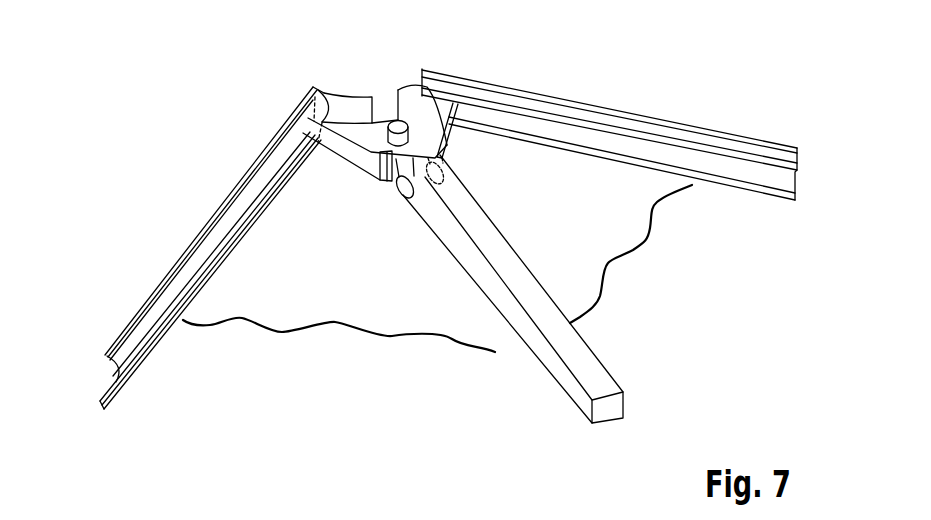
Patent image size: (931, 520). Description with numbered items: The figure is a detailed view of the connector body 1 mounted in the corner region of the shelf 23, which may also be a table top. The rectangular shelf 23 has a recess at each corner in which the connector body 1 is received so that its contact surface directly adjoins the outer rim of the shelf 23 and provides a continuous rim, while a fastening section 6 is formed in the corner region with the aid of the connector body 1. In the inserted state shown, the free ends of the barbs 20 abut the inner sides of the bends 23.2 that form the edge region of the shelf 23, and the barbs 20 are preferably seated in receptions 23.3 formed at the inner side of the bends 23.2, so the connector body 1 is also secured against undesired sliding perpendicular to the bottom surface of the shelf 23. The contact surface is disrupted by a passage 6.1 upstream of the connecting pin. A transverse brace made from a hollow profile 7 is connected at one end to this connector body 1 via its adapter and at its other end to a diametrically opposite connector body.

The connector body 1 is at (380, 199).
The fastening section 6 is at (369, 80).
The passage 6.1 is at (389, 112).
The hollow profile 7 is at (580, 365).
The barbs 20 is at (342, 158).
The shelf 23 is at (345, 299).
The bends 23.2 is at (560, 114).
The receptions 23.3 is at (752, 178).